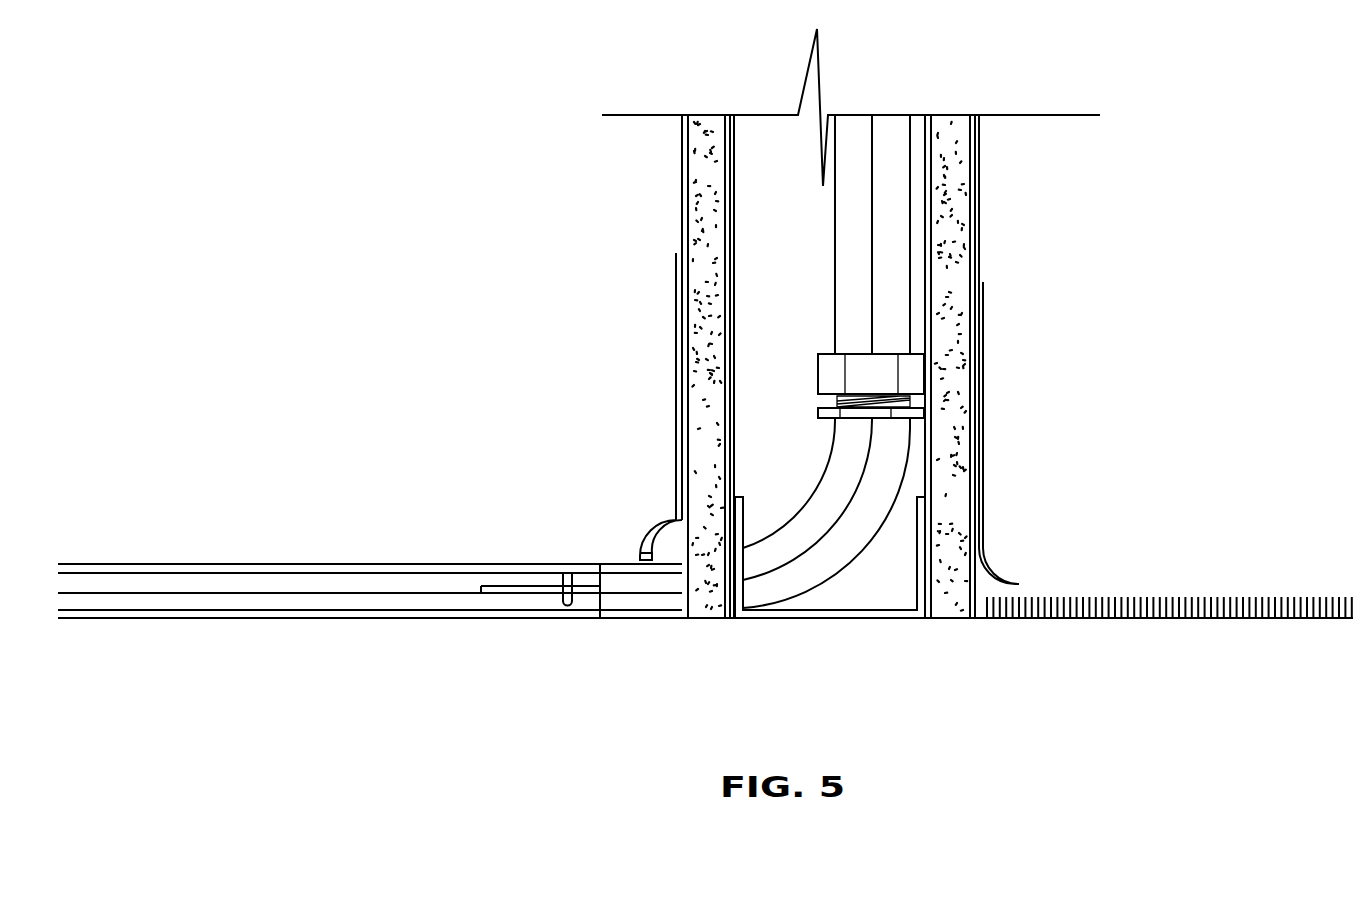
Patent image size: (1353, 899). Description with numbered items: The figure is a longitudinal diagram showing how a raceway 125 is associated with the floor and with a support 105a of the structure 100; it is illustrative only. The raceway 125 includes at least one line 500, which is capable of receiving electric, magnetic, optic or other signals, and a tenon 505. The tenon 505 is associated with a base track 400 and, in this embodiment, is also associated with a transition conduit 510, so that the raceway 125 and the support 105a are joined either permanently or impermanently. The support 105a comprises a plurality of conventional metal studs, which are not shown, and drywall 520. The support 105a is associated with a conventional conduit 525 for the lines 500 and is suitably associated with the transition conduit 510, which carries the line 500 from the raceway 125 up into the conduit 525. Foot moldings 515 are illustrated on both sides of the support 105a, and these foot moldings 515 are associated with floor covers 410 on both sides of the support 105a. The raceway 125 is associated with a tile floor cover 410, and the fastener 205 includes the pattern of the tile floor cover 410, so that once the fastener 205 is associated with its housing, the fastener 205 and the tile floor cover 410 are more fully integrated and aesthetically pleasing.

The structure 100 is at (352, 196).
The support 105a is at (682, 155).
The raceway 125 is at (280, 583).
The fastener 205 is at (443, 567).
The base track 400 is at (503, 590).
The floor cover 410 is at (1247, 555).
The line 500 is at (210, 595).
The tenon 505 is at (668, 644).
The transition conduit 510 is at (846, 472).
The foot molding 515 is at (676, 380).
The drywall 520 is at (953, 167).
The conduit 525 is at (892, 127).